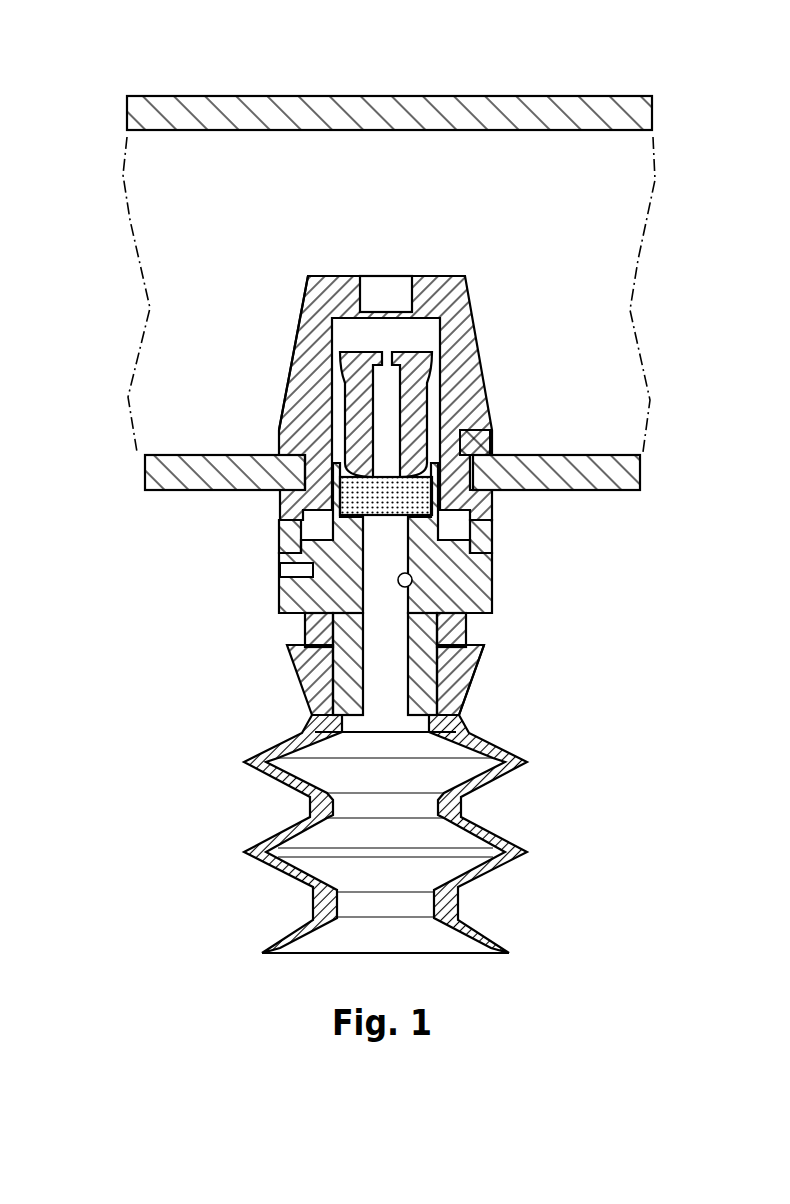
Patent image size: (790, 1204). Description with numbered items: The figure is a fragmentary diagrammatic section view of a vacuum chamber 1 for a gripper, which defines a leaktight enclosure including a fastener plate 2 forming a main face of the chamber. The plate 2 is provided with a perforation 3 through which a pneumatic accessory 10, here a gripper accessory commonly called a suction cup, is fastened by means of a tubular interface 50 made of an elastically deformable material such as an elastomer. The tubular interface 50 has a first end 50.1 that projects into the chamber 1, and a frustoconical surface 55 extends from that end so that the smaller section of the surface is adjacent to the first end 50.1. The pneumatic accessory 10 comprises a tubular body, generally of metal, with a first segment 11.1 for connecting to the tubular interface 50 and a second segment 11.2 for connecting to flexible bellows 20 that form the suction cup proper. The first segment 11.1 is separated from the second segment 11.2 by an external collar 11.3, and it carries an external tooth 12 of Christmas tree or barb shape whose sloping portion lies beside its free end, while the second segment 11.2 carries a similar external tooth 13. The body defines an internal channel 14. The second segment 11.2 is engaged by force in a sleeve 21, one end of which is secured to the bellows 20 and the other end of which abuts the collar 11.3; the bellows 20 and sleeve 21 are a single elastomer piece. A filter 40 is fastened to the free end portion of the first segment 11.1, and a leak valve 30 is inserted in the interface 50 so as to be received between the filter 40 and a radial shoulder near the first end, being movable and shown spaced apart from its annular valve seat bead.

The vacuum chamber 1 is at (180, 113).
The fastener plate 2 is at (175, 455).
The perforation 3 is at (490, 432).
The pneumatic accessory 10 is at (332, 708).
The first segment 11.1 is at (335, 540).
The second segment 11.2 is at (345, 696).
The external collar 11.3 is at (280, 592).
The external tooth 12 is at (465, 532).
The external tooth 13 is at (472, 690).
The internal channel 14 is at (412, 580).
The flexible bellows 20 is at (490, 930).
The sleeve 21 is at (290, 660).
The leak valve 30 is at (357, 401).
The filter 40 is at (322, 510).
The tubular interface 50 is at (403, 357).
The first end 50.1 is at (333, 277).
The frustoconical surface 55 is at (296, 326).